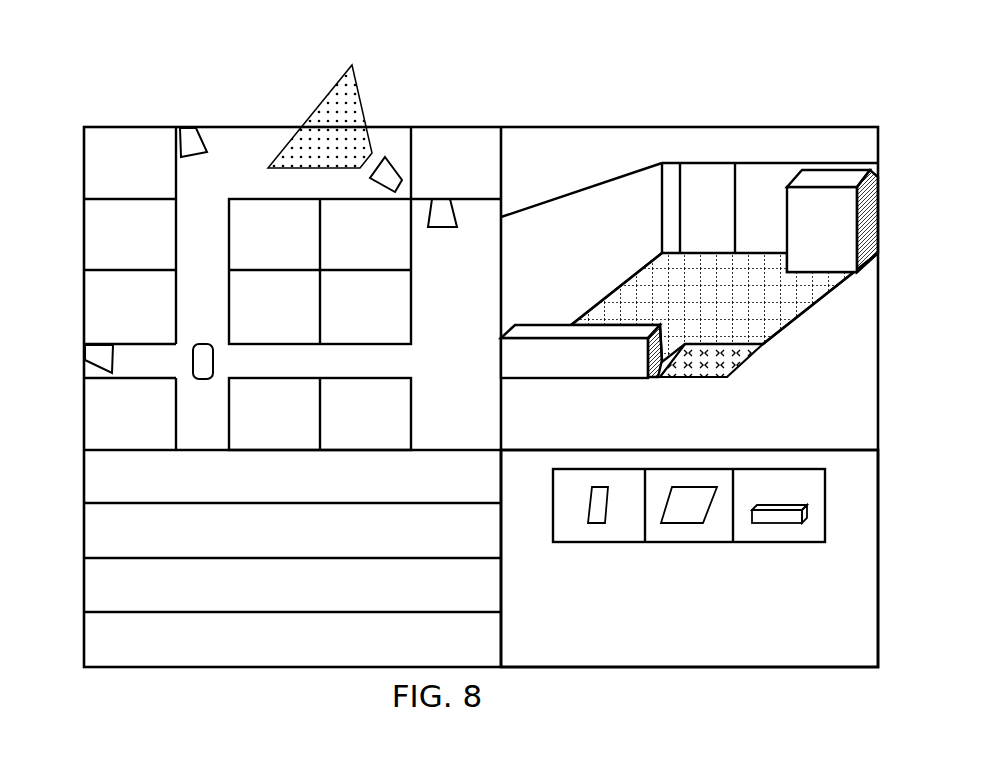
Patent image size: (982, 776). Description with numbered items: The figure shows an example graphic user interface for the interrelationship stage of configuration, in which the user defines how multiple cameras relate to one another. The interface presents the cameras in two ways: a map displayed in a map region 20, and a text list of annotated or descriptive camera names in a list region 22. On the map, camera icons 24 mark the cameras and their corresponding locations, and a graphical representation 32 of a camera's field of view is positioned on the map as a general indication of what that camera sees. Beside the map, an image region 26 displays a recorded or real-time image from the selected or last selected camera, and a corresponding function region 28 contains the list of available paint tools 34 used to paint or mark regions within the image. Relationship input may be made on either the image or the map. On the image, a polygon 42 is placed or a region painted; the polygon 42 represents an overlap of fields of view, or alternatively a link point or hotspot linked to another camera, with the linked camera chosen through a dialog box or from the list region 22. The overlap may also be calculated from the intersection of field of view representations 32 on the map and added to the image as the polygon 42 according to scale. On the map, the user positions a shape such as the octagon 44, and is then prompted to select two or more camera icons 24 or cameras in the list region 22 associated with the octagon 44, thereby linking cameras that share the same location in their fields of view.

The map region 20 is at (300, 127).
The list region 22 is at (293, 667).
The camera icons 24 is at (192, 127).
The image region 26 is at (690, 127).
The function region 28 is at (690, 667).
The graphical representation of field of view 32 is at (366, 140).
The paint tools 34 is at (690, 542).
The polygon 42 is at (748, 358).
The octagon 44 is at (215, 362).